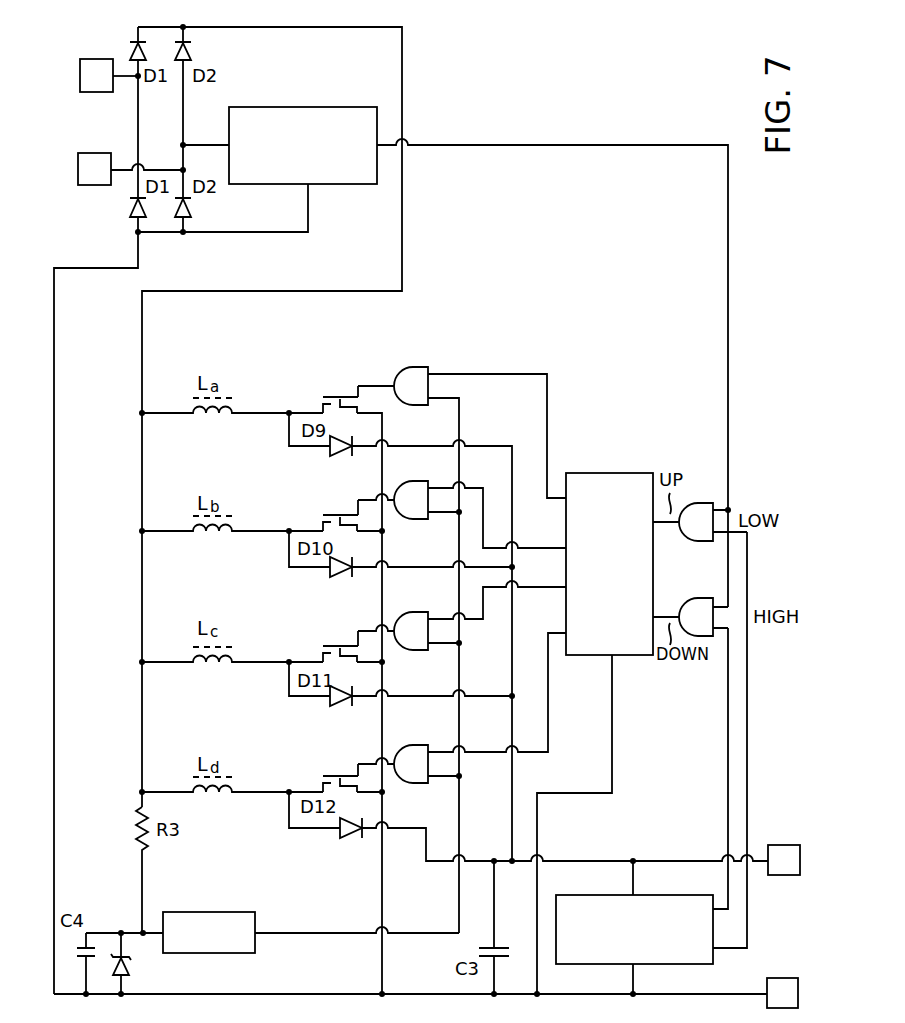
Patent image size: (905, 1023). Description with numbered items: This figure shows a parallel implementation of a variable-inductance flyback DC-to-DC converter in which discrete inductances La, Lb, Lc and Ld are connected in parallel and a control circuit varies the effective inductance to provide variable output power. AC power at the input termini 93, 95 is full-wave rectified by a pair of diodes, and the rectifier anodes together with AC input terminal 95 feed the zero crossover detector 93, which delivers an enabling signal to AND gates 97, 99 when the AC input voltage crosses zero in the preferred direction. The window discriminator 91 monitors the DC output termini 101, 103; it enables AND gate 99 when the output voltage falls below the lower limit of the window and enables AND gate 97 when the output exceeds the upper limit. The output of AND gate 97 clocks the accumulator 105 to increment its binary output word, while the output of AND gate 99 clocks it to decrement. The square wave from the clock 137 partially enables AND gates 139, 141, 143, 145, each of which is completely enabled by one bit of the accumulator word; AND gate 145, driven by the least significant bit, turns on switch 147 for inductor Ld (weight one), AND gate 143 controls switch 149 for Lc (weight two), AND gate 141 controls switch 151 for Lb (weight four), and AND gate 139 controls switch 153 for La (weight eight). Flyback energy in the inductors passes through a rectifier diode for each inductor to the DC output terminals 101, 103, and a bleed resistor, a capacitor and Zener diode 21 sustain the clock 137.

The zero crossover detector 93 is at (93, 59).
The AC input terminus 95 is at (91, 153).
The switch 153 is at (342, 395).
The switch 151 is at (338, 513).
The switch 149 is at (336, 644).
The switch 147 is at (338, 774).
The AND gate 139 is at (416, 366).
The AND gate 141 is at (418, 520).
The AND gate 143 is at (418, 651).
The AND gate 145 is at (416, 744).
The accumulator 105 is at (627, 473).
The AND gate 97 is at (699, 502).
The AND gate 99 is at (700, 599).
The clock 137 is at (240, 897).
The zener diode 21 is at (133, 964).
The window discriminator 91 is at (696, 895).
The DC output terminus 101 is at (786, 845).
The DC output terminus 103 is at (783, 978).